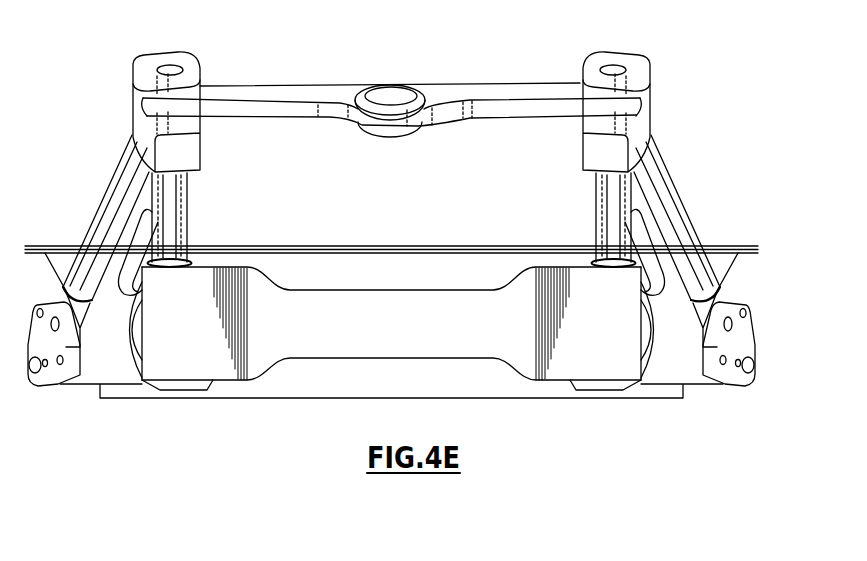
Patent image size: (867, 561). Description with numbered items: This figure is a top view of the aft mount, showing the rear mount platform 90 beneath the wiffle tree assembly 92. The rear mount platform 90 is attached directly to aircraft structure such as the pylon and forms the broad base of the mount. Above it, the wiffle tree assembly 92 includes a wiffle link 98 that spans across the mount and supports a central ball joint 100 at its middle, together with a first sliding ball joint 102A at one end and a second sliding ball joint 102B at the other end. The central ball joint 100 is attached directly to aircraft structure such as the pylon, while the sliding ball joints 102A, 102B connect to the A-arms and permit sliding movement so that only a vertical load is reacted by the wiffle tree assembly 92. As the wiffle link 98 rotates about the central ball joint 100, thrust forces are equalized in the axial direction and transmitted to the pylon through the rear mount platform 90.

The rear mount platform 90 is at (435, 337).
The wiffle tree assembly 92 is at (503, 70).
The wiffle link 98 is at (292, 96).
The central ball joint 100 is at (397, 85).
The first sliding ball joint 102A is at (645, 79).
The second sliding ball joint 102B is at (147, 86).